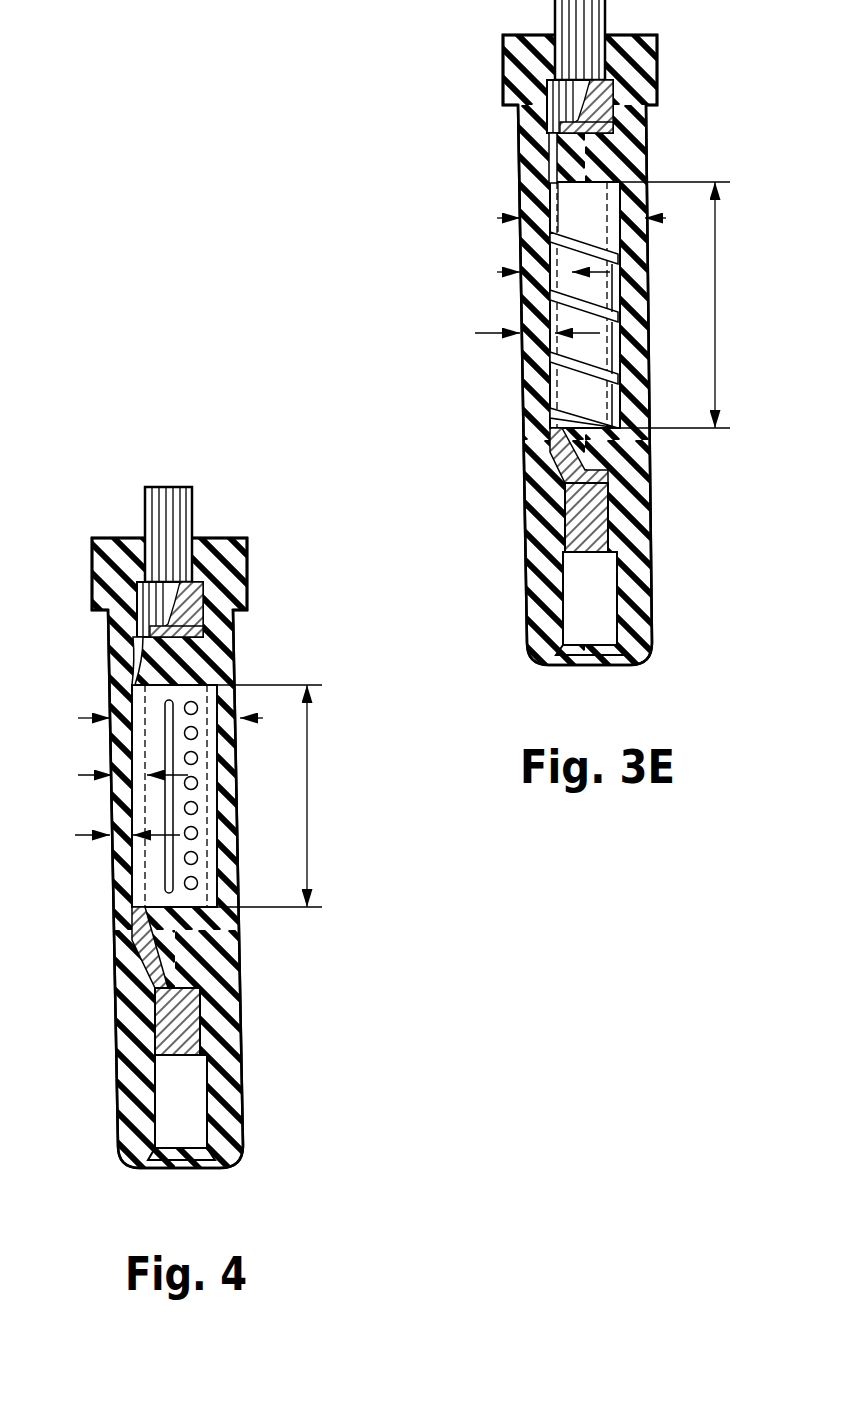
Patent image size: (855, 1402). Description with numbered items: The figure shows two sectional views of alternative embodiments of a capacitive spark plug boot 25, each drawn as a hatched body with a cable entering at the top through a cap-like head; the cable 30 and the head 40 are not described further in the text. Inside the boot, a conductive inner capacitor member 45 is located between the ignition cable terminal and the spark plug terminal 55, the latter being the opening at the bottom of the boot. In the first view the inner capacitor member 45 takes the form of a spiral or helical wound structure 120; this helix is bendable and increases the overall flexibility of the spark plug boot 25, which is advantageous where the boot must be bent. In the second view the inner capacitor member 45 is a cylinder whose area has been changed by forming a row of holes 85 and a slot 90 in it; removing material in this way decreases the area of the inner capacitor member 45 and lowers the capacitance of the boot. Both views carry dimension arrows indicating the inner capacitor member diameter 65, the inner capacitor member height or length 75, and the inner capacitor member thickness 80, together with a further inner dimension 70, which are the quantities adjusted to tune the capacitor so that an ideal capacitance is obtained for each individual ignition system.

In FIG. 3E, the capacitive spark plug boot 25 is at (455, 106).
In FIG. 4, the capacitive spark plug boot 25 is at (282, 605).
In FIG. 4, the cable 30 is at (150, 520).
In FIG. 3E, the housing cap 40 is at (650, 72).
In FIG. 4, the housing cap 40 is at (238, 553).
In FIG. 3E, the inner capacitor member 45 is at (530, 413).
In FIG. 4, the inner capacitor member 45 is at (118, 905).
In FIG. 3E, the spark plug terminal 55 is at (592, 530).
In FIG. 4, the spark plug terminal 55 is at (183, 1035).
In FIG. 3E, the inner capacitor member diameter 65 is at (497, 218).
In FIG. 4, the inner capacitor member diameter 65 is at (81, 718).
In FIG. 3E, the inner diameter 70 is at (475, 333).
In FIG. 4, the inner diameter 70 is at (73, 835).
In FIG. 3E, the inner capacitor member height 75 is at (716, 308).
In FIG. 4, the inner capacitor member height 75 is at (309, 815).
In FIG. 3E, the inner capacitor member thickness 80 is at (497, 272).
In FIG. 4, the inner capacitor member thickness 80 is at (81, 775).
In FIG. 4, the holes 85 is at (198, 879).
In FIG. 4, the slots 90 is at (160, 868).
In FIG. 3E, the spiral or helical wound structure 120 is at (520, 372).